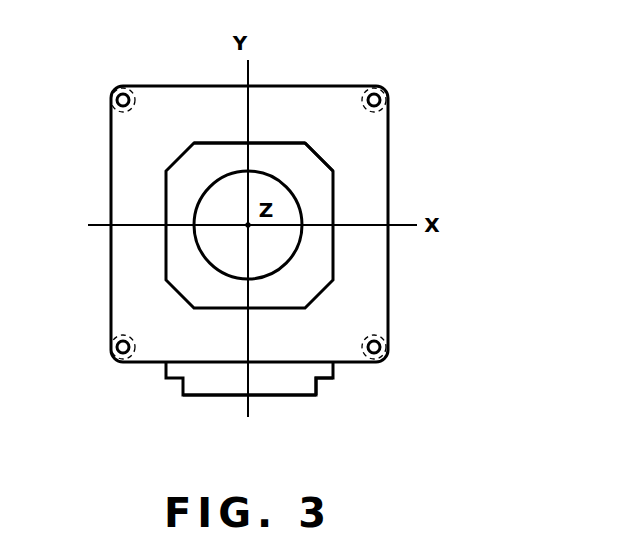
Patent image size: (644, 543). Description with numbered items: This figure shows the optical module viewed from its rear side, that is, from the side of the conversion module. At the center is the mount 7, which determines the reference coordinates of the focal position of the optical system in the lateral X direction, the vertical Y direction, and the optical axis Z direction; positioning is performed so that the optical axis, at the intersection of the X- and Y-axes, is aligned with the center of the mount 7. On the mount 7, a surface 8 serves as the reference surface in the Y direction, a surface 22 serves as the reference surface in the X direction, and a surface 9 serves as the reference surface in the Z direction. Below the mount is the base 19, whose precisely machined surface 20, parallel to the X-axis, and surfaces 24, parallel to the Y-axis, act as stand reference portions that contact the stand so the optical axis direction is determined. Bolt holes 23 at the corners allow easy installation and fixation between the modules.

The mount 7 is at (166, 264).
The surface 8 is at (273, 142).
The surface 9 is at (310, 167).
The base 19 is at (216, 379).
The surface 20 is at (305, 396).
The surface 22 is at (335, 187).
The bolt holes 23 is at (388, 93).
The surfaces 24 is at (322, 388).